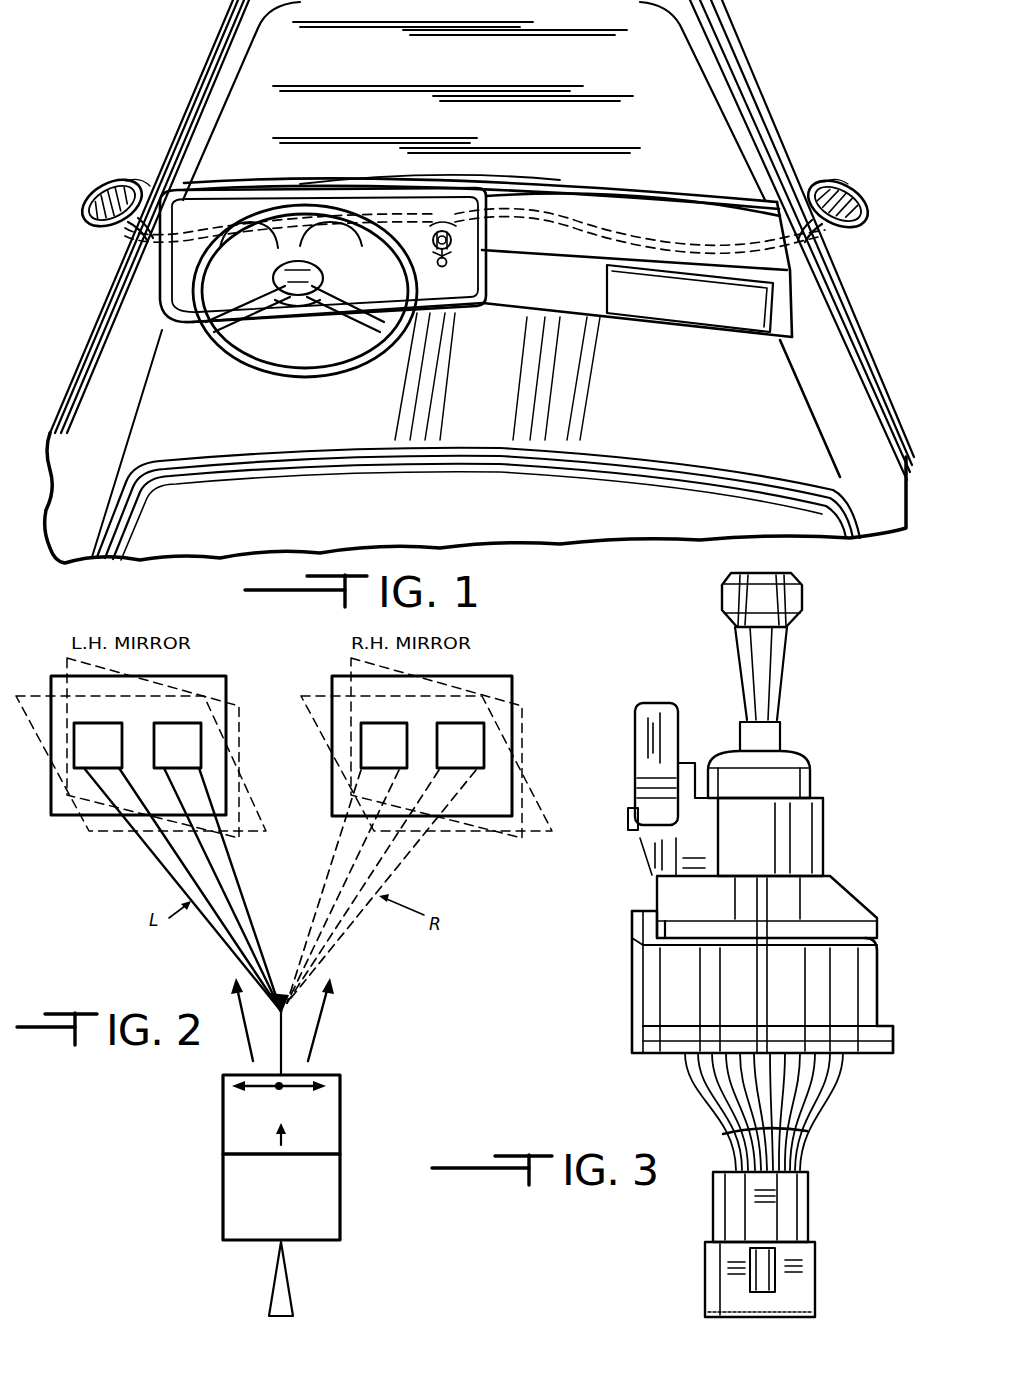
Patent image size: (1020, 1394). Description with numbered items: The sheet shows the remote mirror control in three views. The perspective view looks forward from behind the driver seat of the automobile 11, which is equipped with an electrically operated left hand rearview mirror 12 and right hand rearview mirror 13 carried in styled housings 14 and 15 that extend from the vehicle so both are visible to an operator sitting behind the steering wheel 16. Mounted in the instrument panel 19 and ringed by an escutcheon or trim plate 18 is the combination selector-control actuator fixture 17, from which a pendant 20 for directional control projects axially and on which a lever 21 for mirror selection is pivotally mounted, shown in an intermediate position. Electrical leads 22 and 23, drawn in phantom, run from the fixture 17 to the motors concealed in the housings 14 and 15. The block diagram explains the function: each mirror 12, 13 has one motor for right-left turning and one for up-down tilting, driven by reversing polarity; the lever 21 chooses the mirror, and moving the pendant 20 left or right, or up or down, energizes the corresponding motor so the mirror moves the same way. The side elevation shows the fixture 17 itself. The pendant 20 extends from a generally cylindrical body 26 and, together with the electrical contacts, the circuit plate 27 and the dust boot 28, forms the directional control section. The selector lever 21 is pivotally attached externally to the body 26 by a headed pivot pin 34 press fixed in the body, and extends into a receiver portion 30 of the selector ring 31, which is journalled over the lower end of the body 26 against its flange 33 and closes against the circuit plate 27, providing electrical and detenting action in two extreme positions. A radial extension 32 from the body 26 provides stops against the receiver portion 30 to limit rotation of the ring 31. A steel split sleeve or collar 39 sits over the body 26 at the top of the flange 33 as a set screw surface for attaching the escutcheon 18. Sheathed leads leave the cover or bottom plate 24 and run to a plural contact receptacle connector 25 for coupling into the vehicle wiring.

In FIG. 1, the automobile 11 is at (770, 109).
In FIG. 1, the left hand rearview mirror 12 is at (107, 220).
In FIG. 2, the left hand rearview mirror 12 is at (207, 687).
In FIG. 1, the right hand rearview mirror 13 is at (834, 225).
In FIG. 2, the right hand rearview mirror 13 is at (503, 690).
In FIG. 1, the housing 14 is at (138, 184).
In FIG. 1, the housing 15 is at (830, 178).
In FIG. 1, the steering wheel 16 is at (281, 378).
In FIG. 1, the combination selector-control actuator fixture 17 is at (468, 252).
In FIG. 2, the combination selector-control actuator fixture 17 is at (211, 1186).
In FIG. 3, the combination selector-control actuator fixture 17 is at (577, 1037).
In FIG. 1, the escutcheon or trim plate 18 is at (452, 235).
In FIG. 1, the instrument panel 19 is at (452, 308).
In FIG. 1, the pendant 20 is at (441, 268).
In FIG. 2, the pendant 20 is at (287, 1293).
In FIG. 3, the pendant 20 is at (780, 658).
In FIG. 1, the lever 21 is at (432, 242).
In FIG. 2, the lever 21 is at (338, 1127).
In FIG. 3, the lever 21 is at (643, 707).
In FIG. 1, the electrical lead 22 is at (431, 212).
In FIG. 1, the electrical lead 23 is at (558, 212).
In FIG. 3, the cover or bottom plate 24 is at (877, 1053).
In FIG. 3, the plural contact receptacle connector 25 is at (803, 1279).
In FIG. 3, the generally cylindrical body 26 is at (690, 863).
In FIG. 3, the circuit plate 27 is at (626, 1033).
In FIG. 3, the dust boot 28 is at (780, 758).
In FIG. 3, the receiver portion 30 is at (640, 945).
In FIG. 3, the selector ring 31 is at (657, 993).
In FIG. 3, the radial extension 32 is at (652, 907).
In FIG. 3, the flange 33 is at (868, 928).
In FIG. 3, the headed pivot pin 34 is at (628, 820).
In FIG. 3, the steel split sleeve or collar 39 is at (810, 863).